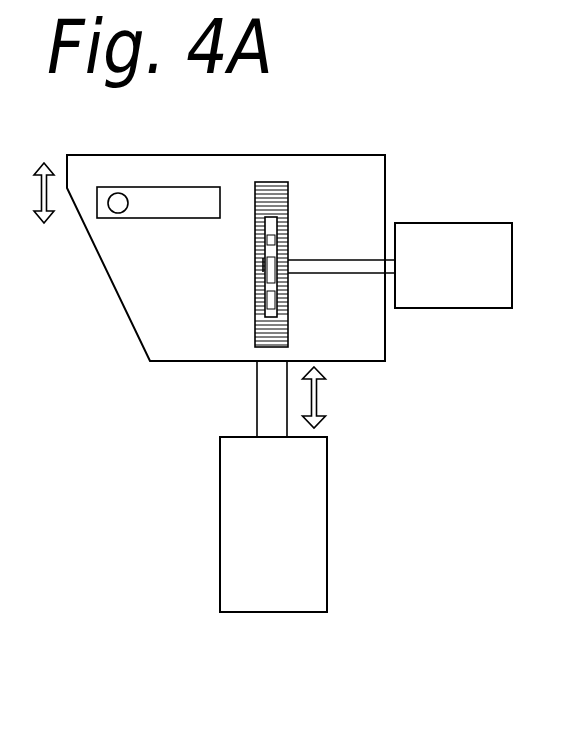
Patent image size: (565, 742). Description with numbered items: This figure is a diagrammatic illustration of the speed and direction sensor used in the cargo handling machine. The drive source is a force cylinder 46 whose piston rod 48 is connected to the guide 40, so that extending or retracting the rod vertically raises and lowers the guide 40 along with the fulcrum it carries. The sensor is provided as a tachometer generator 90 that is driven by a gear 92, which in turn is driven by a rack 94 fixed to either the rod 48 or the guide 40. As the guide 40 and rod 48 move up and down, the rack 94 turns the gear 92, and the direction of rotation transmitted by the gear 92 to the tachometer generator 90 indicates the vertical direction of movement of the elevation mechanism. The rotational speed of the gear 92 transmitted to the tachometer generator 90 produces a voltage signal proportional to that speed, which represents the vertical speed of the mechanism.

The guide 40 is at (368, 187).
The force cylinder 46 is at (327, 540).
The piston rod 48 is at (272, 407).
The tachometer generator 90 is at (458, 232).
The gear 92 is at (255, 262).
The rack 94 is at (268, 182).